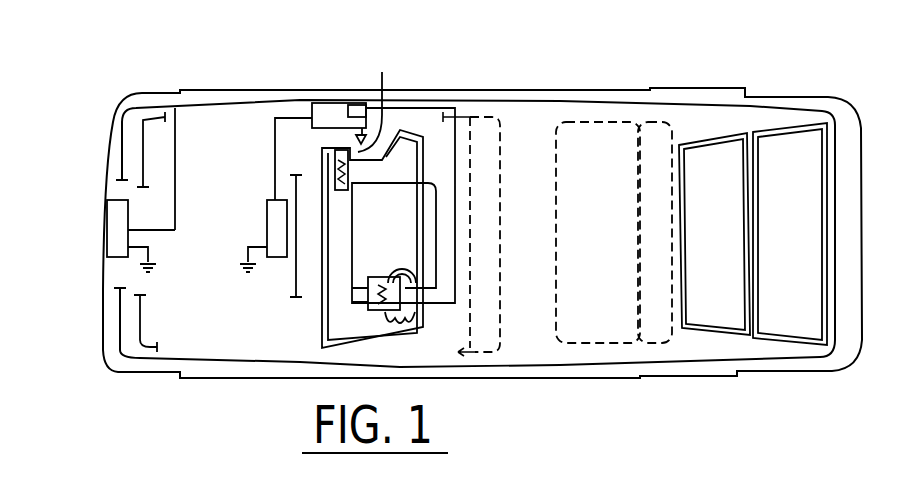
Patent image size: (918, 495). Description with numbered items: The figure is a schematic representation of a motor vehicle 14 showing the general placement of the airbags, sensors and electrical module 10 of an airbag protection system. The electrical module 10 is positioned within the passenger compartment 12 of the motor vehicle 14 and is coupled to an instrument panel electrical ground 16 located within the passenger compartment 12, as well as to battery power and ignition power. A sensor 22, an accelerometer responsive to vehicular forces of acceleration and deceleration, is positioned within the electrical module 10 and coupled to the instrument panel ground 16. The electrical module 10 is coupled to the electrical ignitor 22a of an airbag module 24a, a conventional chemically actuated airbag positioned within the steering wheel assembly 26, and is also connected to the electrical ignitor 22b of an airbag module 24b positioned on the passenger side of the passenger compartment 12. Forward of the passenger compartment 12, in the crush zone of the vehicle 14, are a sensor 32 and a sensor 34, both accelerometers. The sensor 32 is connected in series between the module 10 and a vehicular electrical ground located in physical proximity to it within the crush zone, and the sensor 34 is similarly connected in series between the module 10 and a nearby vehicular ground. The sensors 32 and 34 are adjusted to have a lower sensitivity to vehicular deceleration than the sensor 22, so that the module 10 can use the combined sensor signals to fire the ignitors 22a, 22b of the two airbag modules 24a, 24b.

The electrical module 10 is at (320, 99).
The passenger compartment 12 is at (545, 112).
The motor vehicle 14 is at (455, 27).
The instrument panel electrical ground 16 is at (355, 140).
The sensor 22 is at (357, 103).
The electrical ignitor 22a is at (382, 277).
The electrical ignitor 22b is at (347, 185).
The airbag module 24a is at (392, 258).
The airbag module 24b is at (370, 99).
The steering wheel assembly 26 is at (413, 279).
The sensor 32 is at (105, 257).
The sensor 34 is at (283, 257).